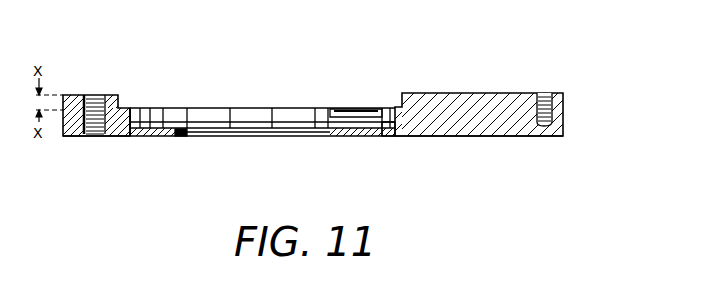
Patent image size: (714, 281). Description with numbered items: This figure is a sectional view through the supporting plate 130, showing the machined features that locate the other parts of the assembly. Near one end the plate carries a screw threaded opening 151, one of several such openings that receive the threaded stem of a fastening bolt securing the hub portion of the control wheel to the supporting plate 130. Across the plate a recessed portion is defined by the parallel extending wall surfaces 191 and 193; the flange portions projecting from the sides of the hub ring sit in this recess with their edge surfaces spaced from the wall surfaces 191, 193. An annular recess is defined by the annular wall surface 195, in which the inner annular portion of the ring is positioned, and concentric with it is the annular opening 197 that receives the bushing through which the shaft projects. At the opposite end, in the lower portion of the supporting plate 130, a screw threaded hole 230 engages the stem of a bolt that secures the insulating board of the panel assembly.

The supporting plate 130 is at (479, 84).
The screw threaded opening 151 is at (93, 95).
The wall surface 191 is at (118, 102).
The wall surface 193 is at (386, 100).
The annular wall surface 195 is at (384, 137).
The annular opening 197 is at (182, 138).
The screw threaded hole 230 is at (544, 93).